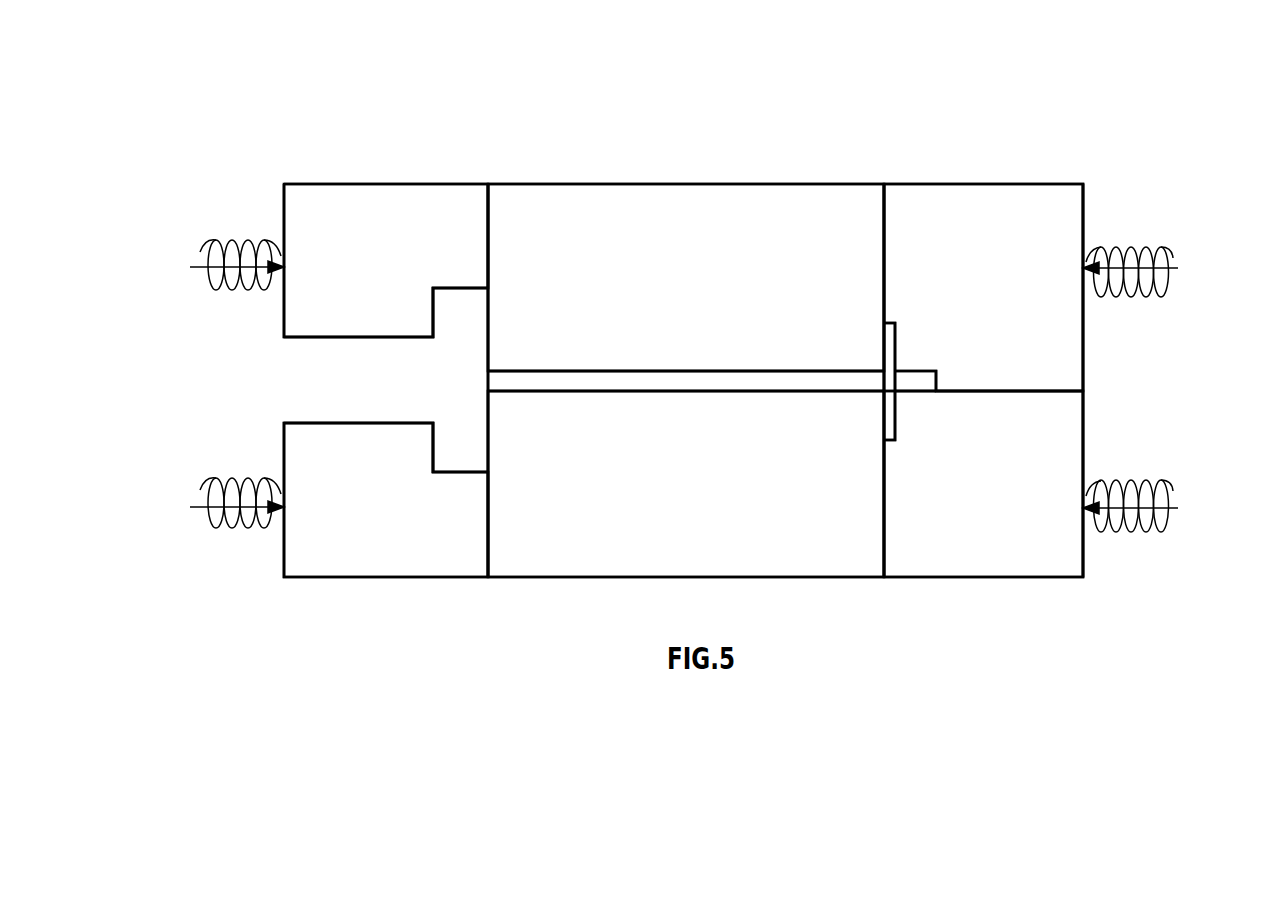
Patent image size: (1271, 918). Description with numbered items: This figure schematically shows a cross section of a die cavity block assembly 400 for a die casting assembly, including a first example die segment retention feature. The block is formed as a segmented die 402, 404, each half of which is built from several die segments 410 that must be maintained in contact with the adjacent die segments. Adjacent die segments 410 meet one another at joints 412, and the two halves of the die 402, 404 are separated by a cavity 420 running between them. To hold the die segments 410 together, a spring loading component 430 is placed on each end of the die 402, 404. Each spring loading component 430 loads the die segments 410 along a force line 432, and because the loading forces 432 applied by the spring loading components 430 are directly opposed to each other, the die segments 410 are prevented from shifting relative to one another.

The ion trap / mass analyzer assembly 400 is at (350, 86).
The segmented die 402 is at (1084, 211).
The segmented die 404 is at (1084, 442).
The die segment 410 is at (391, 269).
The gap between electrode blocks 412 is at (488, 248).
The slot 420 is at (312, 381).
The spring loading component 430 is at (240, 240).
The force line 432 is at (192, 266).